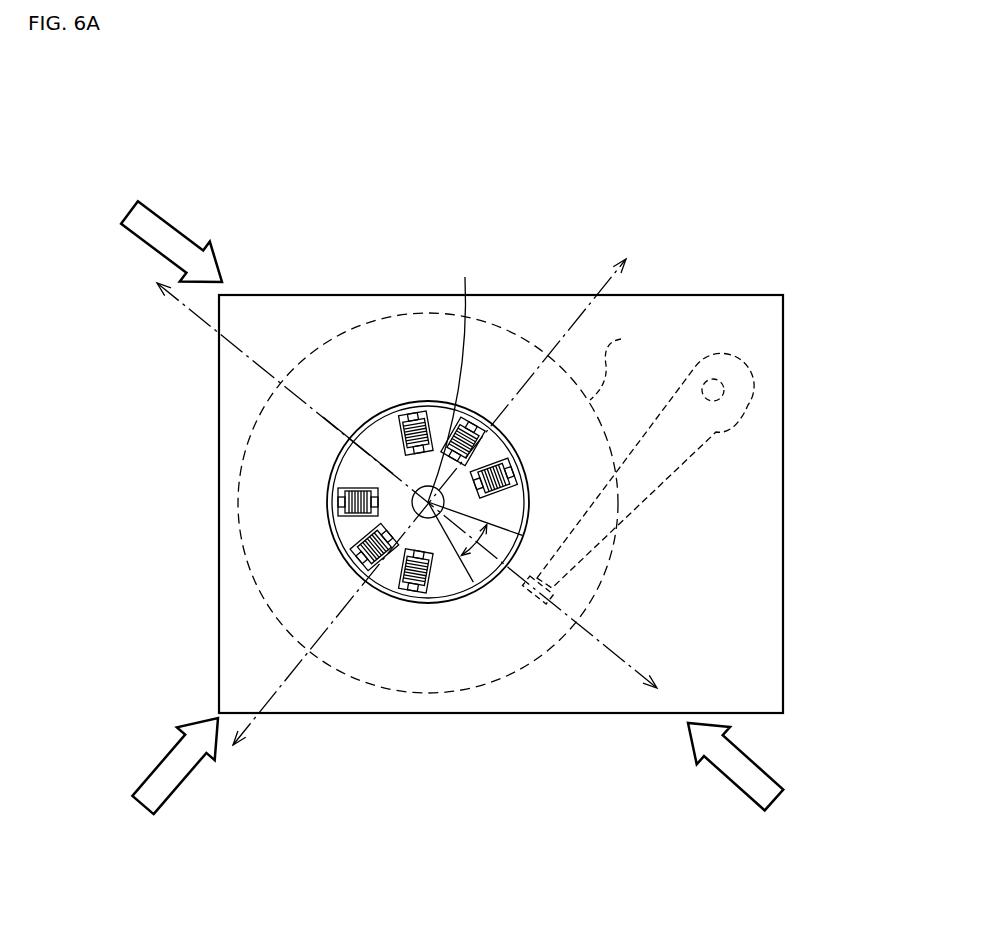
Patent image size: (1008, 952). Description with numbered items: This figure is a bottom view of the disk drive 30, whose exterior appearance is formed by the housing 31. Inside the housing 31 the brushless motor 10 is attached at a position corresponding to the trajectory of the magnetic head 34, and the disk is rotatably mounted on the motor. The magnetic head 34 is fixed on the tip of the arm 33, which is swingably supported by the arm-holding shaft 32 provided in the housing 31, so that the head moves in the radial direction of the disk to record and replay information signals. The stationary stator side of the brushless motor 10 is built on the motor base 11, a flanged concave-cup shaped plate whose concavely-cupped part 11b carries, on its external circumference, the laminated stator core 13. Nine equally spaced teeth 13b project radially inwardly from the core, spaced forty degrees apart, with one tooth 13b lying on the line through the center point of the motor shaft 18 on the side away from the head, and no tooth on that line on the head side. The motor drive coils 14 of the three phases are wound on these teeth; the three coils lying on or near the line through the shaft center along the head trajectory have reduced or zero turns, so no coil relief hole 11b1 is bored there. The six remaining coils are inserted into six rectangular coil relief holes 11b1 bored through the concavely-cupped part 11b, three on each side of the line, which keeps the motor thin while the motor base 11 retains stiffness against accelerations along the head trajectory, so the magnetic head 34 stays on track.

The disk drive 30 is at (322, 222).
The housing 31 is at (784, 553).
The arm-holding shaft 32 is at (724, 387).
The arm 33 is at (716, 436).
The magnetic head 34 is at (550, 590).
The brushless motor 10 is at (320, 540).
The motor base 11 is at (357, 644).
The concavely-cupped part 11b is at (385, 580).
The coil relief hole 11b1 is at (430, 580).
The stator core 13 is at (471, 677).
The tooth 13b is at (471, 677).
The motor drive coil 14 is at (460, 580).
The motor shaft 18 is at (413, 496).